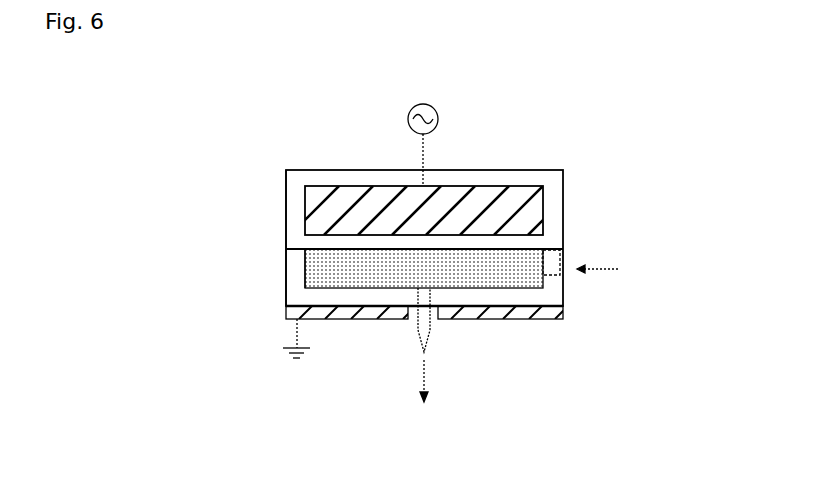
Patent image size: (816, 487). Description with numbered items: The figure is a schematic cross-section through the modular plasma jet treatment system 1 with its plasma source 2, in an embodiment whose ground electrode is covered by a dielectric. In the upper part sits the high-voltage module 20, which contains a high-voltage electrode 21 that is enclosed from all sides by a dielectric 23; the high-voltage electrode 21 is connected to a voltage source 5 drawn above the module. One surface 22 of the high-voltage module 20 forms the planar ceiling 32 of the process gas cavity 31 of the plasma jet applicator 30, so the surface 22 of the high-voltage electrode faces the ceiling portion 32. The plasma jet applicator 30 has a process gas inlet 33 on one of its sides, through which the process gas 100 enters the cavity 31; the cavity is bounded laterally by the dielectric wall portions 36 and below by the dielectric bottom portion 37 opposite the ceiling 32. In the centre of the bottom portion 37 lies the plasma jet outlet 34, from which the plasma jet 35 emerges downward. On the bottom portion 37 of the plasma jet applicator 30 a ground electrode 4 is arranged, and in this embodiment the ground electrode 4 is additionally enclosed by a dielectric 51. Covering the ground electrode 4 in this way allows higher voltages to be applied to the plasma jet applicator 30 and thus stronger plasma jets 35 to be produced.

The system 1 is at (429, 249).
The plasma source 2 is at (632, 153).
The ground electrode 4 is at (317, 308).
The AC voltage source 5 is at (437, 110).
The high-voltage module 20 is at (267, 172).
The high-voltage electrode 21 is at (400, 203).
The surface of the high-voltage module 22 is at (415, 179).
The dielectric 23 is at (296, 202).
The plasma jet applicator 30 is at (272, 275).
The process gas cavity 31 is at (463, 260).
The ceiling 32 is at (385, 248).
The process gas inlet 33 is at (548, 268).
The plasma jet outlet 34 is at (520, 293).
The plasma jet 35 is at (427, 295).
The wall portion 36 is at (297, 272).
The bottom portion 37 is at (470, 315).
The dielectric 51 is at (330, 316).
The process gas 100 is at (621, 270).